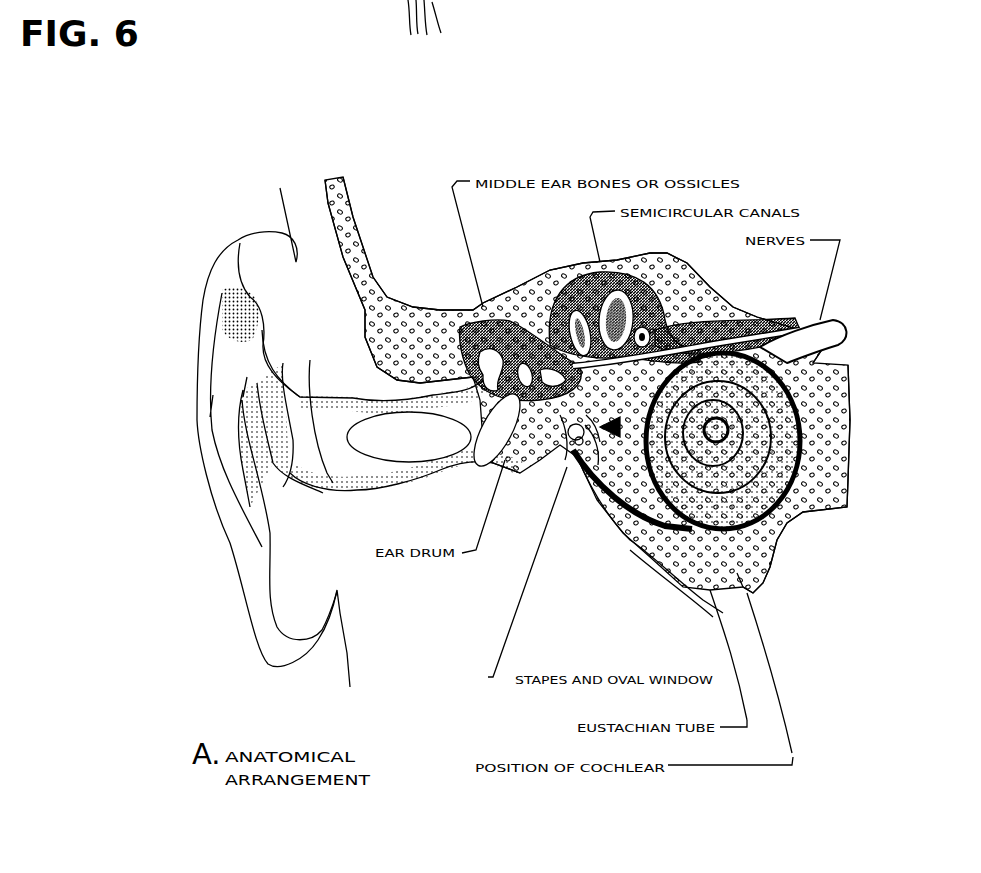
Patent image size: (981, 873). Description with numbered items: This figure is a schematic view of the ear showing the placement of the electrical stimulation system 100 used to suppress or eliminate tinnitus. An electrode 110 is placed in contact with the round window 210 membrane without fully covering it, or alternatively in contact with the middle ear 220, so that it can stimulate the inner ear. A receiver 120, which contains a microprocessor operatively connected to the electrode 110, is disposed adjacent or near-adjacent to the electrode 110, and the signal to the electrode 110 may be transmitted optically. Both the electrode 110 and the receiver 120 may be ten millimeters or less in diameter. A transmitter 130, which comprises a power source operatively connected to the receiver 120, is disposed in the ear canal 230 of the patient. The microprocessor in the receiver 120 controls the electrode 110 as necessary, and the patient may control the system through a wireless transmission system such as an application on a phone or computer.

The electrical stimulation system 100 is at (620, 427).
The electrode 110 is at (720, 497).
The receiver 120 is at (542, 463).
The transmitter 130 is at (391, 410).
The round window 210 is at (553, 480).
The middle ear 220 is at (525, 467).
The ear canal 230 is at (337, 450).